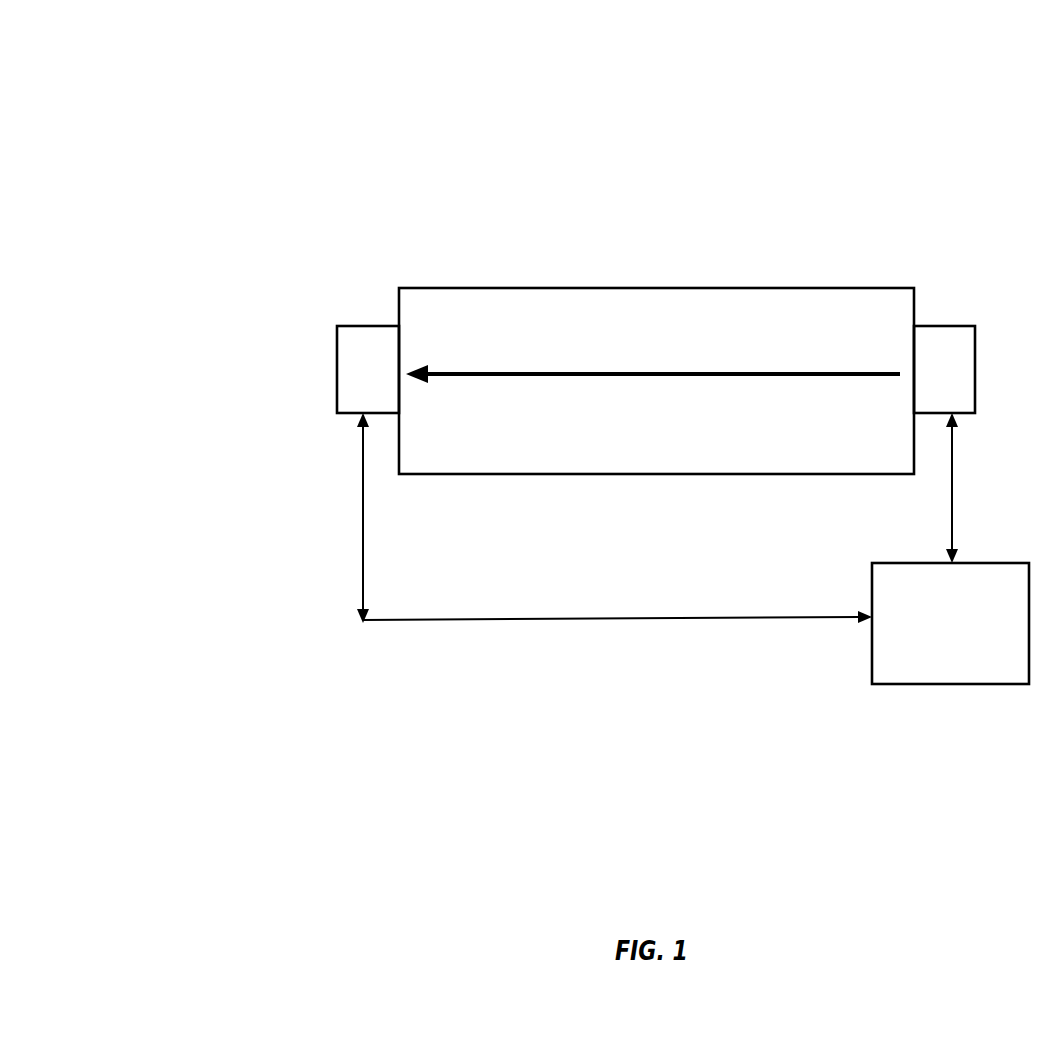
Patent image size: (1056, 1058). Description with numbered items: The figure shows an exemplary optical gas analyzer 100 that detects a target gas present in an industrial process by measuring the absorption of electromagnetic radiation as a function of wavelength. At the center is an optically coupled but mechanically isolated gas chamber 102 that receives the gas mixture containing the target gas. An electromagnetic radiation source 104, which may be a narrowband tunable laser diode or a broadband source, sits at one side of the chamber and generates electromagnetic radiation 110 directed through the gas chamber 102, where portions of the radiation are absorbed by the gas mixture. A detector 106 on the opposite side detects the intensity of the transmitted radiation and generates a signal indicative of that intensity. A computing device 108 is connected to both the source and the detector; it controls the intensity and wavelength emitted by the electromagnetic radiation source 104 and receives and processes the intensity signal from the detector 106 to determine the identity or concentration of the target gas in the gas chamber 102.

The gas analyzer 100 is at (136, 110).
The gas chamber 102 is at (779, 452).
The electromagnetic radiation source 104 is at (959, 378).
The detector 106 is at (385, 379).
The computing device 108 is at (971, 639).
The electromagnetic radiation 110 is at (796, 372).